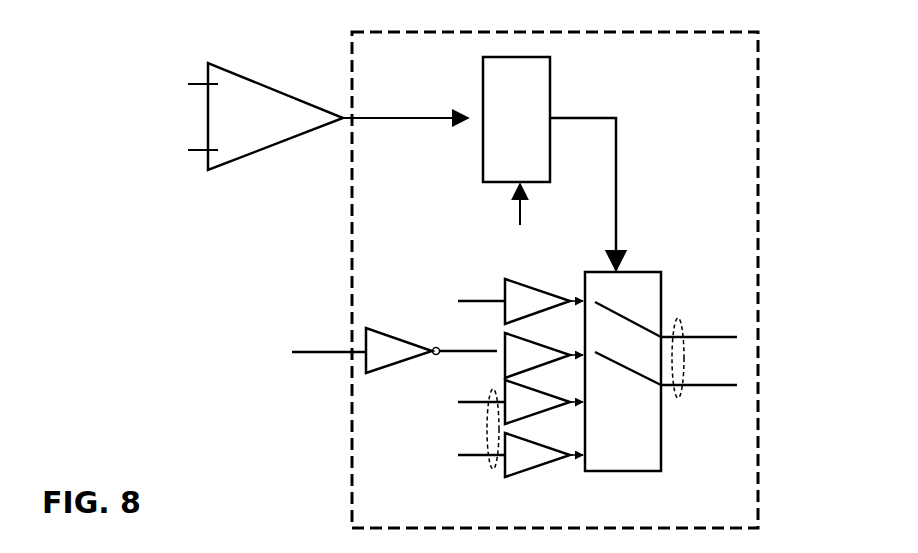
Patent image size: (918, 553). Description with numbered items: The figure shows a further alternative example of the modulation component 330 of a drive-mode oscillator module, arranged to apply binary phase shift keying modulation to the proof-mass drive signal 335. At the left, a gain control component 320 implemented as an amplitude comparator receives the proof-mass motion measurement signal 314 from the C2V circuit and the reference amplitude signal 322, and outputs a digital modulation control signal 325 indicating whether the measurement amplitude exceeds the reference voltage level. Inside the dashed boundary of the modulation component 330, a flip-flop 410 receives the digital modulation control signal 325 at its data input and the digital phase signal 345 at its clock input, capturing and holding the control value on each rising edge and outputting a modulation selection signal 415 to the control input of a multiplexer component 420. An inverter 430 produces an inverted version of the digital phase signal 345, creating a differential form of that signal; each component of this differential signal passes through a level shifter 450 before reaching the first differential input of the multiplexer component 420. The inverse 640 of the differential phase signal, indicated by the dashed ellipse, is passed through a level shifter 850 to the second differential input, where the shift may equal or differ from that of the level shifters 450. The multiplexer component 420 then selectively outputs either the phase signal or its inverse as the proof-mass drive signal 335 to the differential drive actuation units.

The proof-mass motion measurement signal 314 is at (188, 150).
The gain control component 320 is at (255, 82).
The reference amplitude signal 322 is at (188, 84).
The digital modulation control signal 325 is at (405, 110).
The modulation component 330 is at (760, 165).
The proof-mass drive signal 335 is at (678, 398).
The digital phase signal 345 is at (513, 217).
The flip-flop 410 is at (544, 82).
The modulation selection signal 415 is at (627, 167).
The multiplexer component 420 is at (642, 269).
The inverter 430 is at (392, 337).
The level shifter 450 is at (542, 303).
The inverse of the differential form of the digital phase signal 640 is at (494, 470).
The level shifter 850 is at (542, 404).